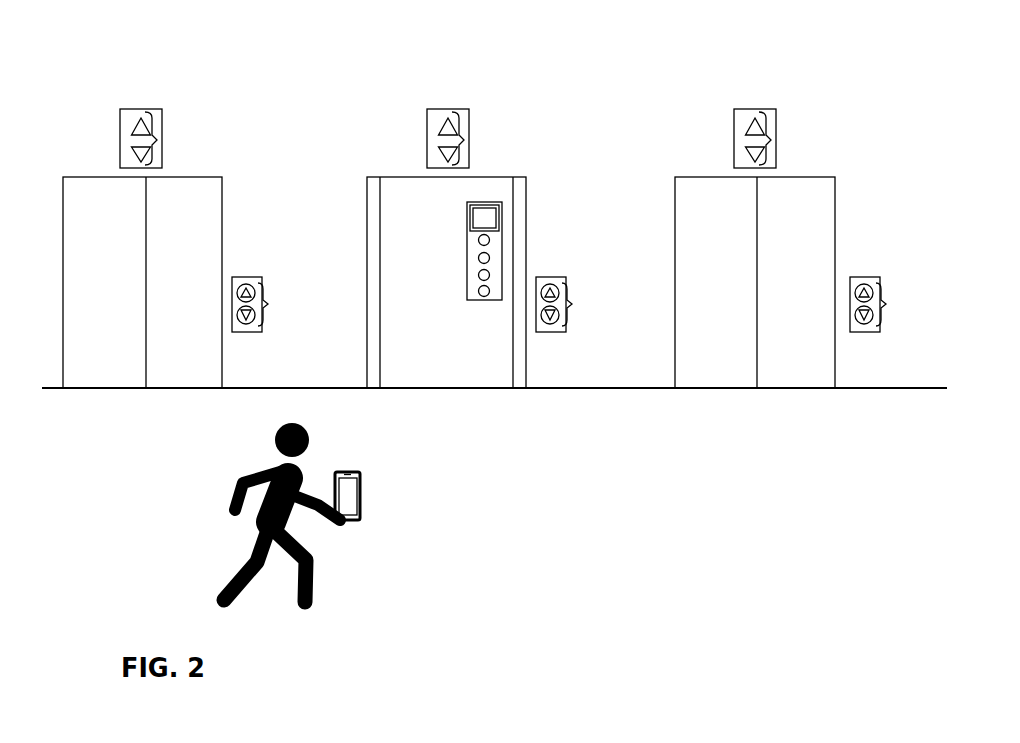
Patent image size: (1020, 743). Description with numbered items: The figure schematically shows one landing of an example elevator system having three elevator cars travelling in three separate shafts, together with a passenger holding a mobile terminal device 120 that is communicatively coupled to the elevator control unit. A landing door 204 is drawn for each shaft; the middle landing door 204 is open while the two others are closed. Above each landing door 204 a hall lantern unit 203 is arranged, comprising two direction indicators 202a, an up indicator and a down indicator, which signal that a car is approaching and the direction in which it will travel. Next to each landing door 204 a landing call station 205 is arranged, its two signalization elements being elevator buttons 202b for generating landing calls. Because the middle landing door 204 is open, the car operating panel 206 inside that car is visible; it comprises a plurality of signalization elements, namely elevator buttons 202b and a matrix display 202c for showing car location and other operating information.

The mobile terminal device 120 is at (343, 472).
The direction indicator 202a is at (486, 138).
The elevator button 202b is at (467, 235).
The matrix display 202c is at (468, 207).
The hall lantern unit 203 is at (479, 102).
The landing door 204 is at (222, 205).
The landing call station 205 is at (247, 277).
The car operating panel 206 is at (445, 274).